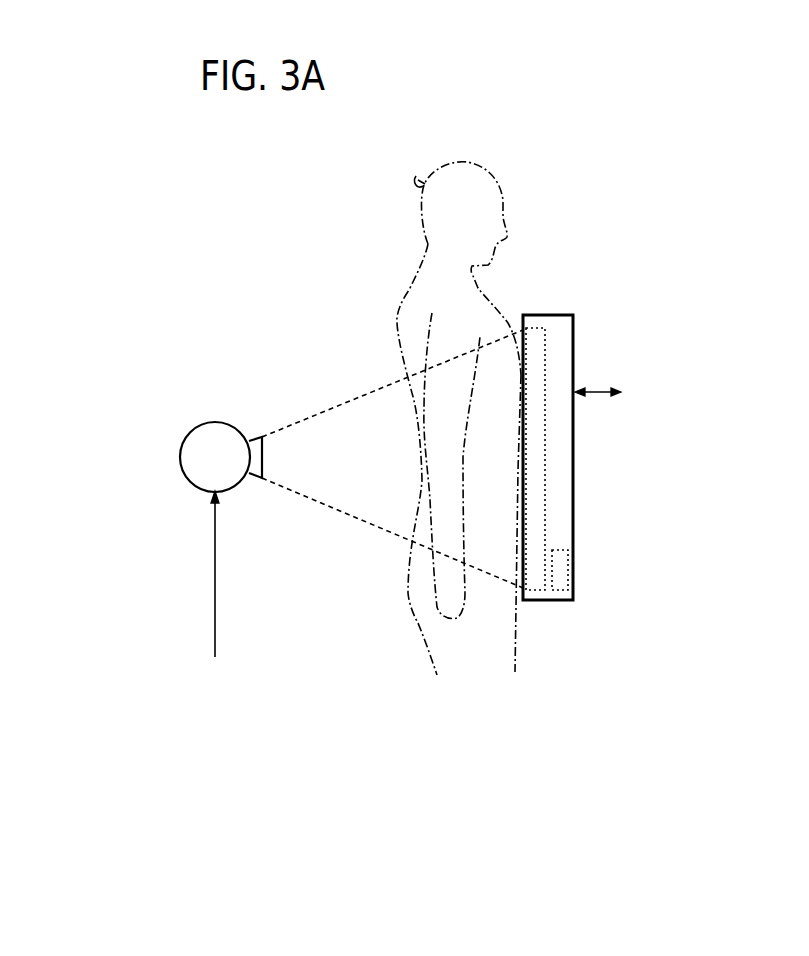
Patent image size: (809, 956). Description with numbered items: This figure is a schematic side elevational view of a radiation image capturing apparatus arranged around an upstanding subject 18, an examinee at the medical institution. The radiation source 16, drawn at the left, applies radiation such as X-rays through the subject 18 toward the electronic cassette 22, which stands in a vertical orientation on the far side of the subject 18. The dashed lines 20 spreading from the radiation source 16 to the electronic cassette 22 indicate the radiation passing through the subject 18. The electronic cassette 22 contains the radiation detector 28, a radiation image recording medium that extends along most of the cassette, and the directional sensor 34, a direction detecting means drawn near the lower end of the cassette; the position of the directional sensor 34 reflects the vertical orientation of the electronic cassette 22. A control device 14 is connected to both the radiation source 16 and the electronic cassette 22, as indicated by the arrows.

The control device 14 is at (446, 541).
The radiation source 16 is at (202, 470).
The subject 18 is at (421, 176).
The imaging range of camera 20 is at (292, 424).
The electronic cassette 22 is at (560, 315).
The radiation detector 28 is at (537, 602).
The directional sensor 34 is at (563, 545).